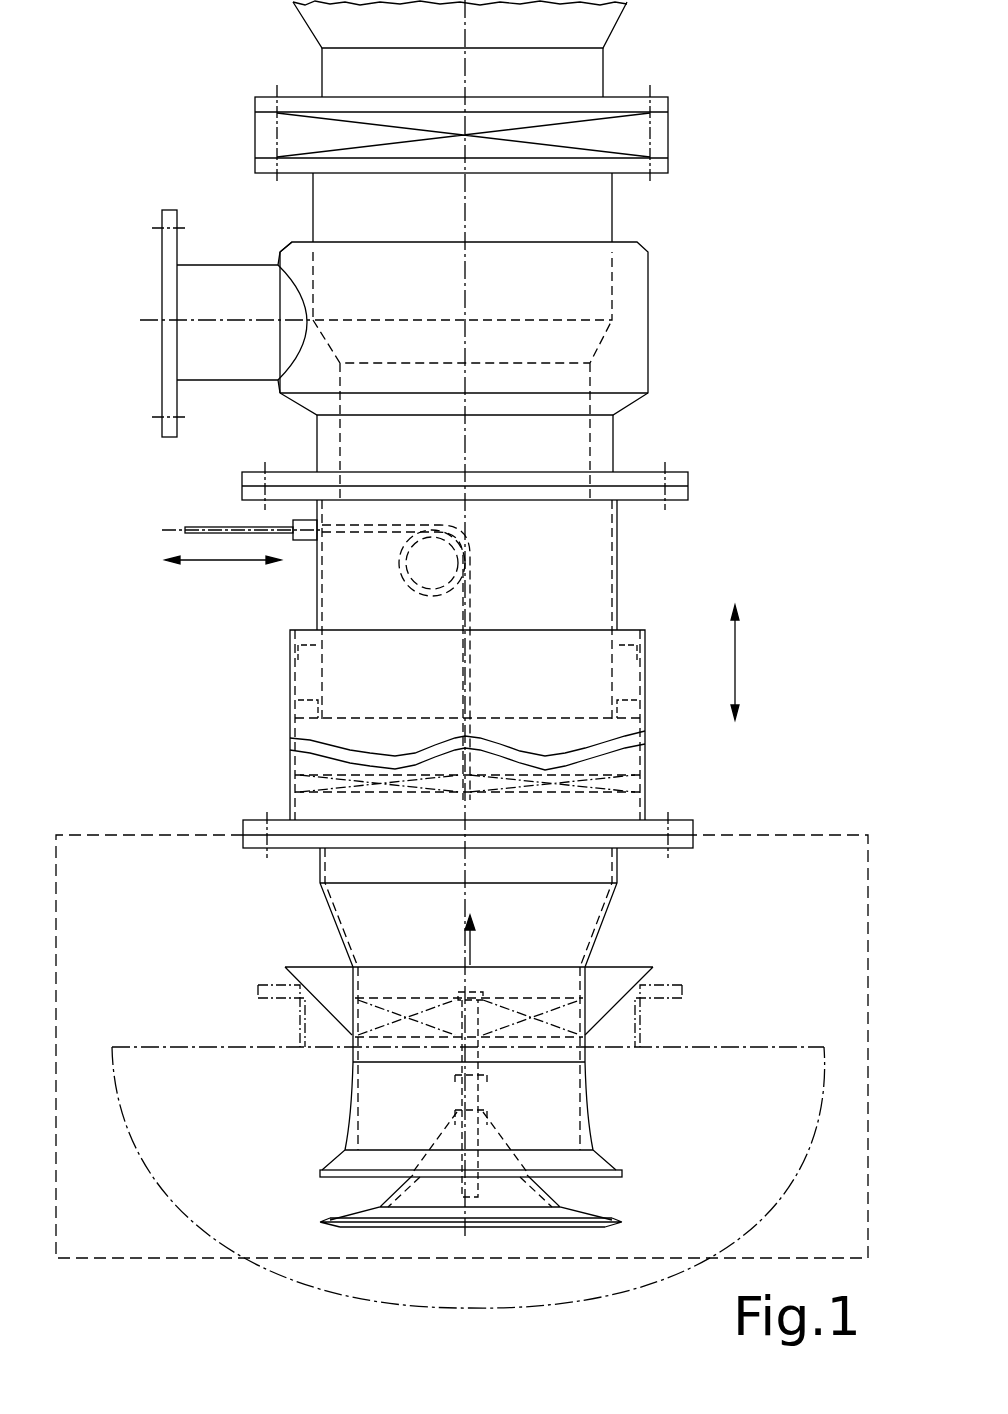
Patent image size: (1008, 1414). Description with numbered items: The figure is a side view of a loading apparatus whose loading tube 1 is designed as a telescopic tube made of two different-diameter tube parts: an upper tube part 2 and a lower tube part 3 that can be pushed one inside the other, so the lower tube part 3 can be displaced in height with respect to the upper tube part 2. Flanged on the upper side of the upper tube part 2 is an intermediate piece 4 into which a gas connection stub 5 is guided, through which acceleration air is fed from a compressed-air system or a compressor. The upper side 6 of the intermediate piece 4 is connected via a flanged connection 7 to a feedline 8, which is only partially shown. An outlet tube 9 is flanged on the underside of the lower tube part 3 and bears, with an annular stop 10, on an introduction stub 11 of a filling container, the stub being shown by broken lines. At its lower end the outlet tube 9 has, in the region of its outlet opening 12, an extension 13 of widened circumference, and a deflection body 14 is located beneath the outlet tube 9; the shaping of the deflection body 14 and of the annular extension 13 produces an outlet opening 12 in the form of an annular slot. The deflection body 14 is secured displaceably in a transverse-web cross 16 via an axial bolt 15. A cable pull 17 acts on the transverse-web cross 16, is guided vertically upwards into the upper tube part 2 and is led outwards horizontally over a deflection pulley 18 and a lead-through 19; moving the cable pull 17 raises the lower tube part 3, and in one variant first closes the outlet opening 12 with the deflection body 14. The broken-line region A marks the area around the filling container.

The loading tube 1 is at (176, 127).
The upper tube part 2 is at (647, 546).
The lower tube part 3 is at (686, 766).
The intermediate piece 4 is at (702, 338).
The gas connection stub 5 is at (240, 310).
The upper side 6 is at (650, 204).
The flanged connection 7 is at (658, 130).
The feedline 8 is at (597, 20).
The outlet tube 9 is at (647, 922).
The annular stop 10 is at (624, 980).
The introduction stub 11 is at (675, 996).
The outlet opening 12 is at (622, 1198).
The extension 13 is at (605, 1158).
The deflection body 14 is at (512, 1198).
The axial bolt 15 is at (498, 1005).
The transverse-web cross 16 is at (398, 1005).
The cable pull 17 is at (215, 527).
The deflection pulley 18 is at (410, 583).
The lead-through 19 is at (305, 540).
The region A is at (772, 838).